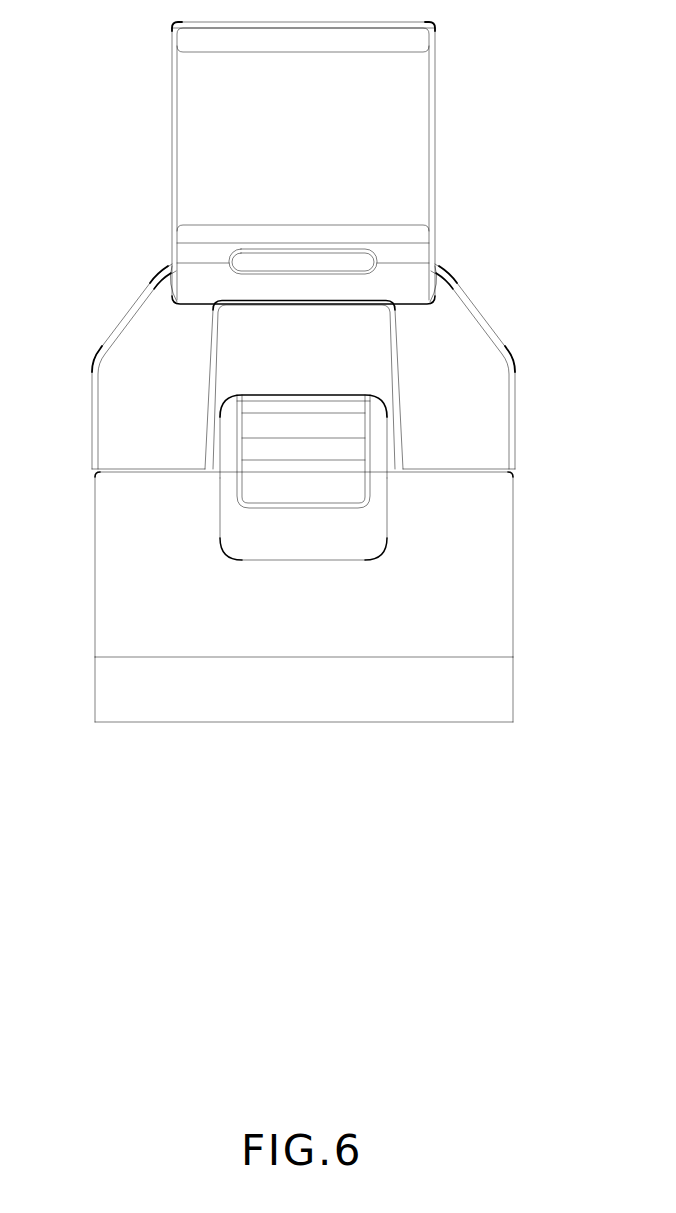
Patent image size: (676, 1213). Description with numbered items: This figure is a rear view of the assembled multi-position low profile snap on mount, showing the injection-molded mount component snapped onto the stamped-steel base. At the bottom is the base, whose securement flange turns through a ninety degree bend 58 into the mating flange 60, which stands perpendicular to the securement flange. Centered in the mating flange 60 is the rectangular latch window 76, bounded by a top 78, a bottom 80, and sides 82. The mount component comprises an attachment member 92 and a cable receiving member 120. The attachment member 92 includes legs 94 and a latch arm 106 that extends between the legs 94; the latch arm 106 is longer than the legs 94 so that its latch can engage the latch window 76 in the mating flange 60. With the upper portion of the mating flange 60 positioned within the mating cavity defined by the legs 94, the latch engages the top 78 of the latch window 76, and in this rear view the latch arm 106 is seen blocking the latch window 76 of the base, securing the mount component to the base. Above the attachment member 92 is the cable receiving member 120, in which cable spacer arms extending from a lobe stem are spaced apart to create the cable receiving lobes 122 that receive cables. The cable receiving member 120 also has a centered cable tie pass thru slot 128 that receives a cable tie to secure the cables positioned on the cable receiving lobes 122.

The 90 degree bend 58 is at (465, 694).
The mating flange 60 is at (457, 583).
The latch window 76 is at (243, 533).
The top 78 is at (258, 395).
The bottom 80 is at (268, 558).
The sides 82 is at (385, 522).
The attachment member 92 is at (140, 293).
The legs 94 is at (455, 348).
The latch arm 106 is at (345, 475).
The cable receiving member 120 is at (172, 103).
The cable receiving lobes 122 is at (388, 150).
The cable tie pass thru slot 128 is at (377, 265).